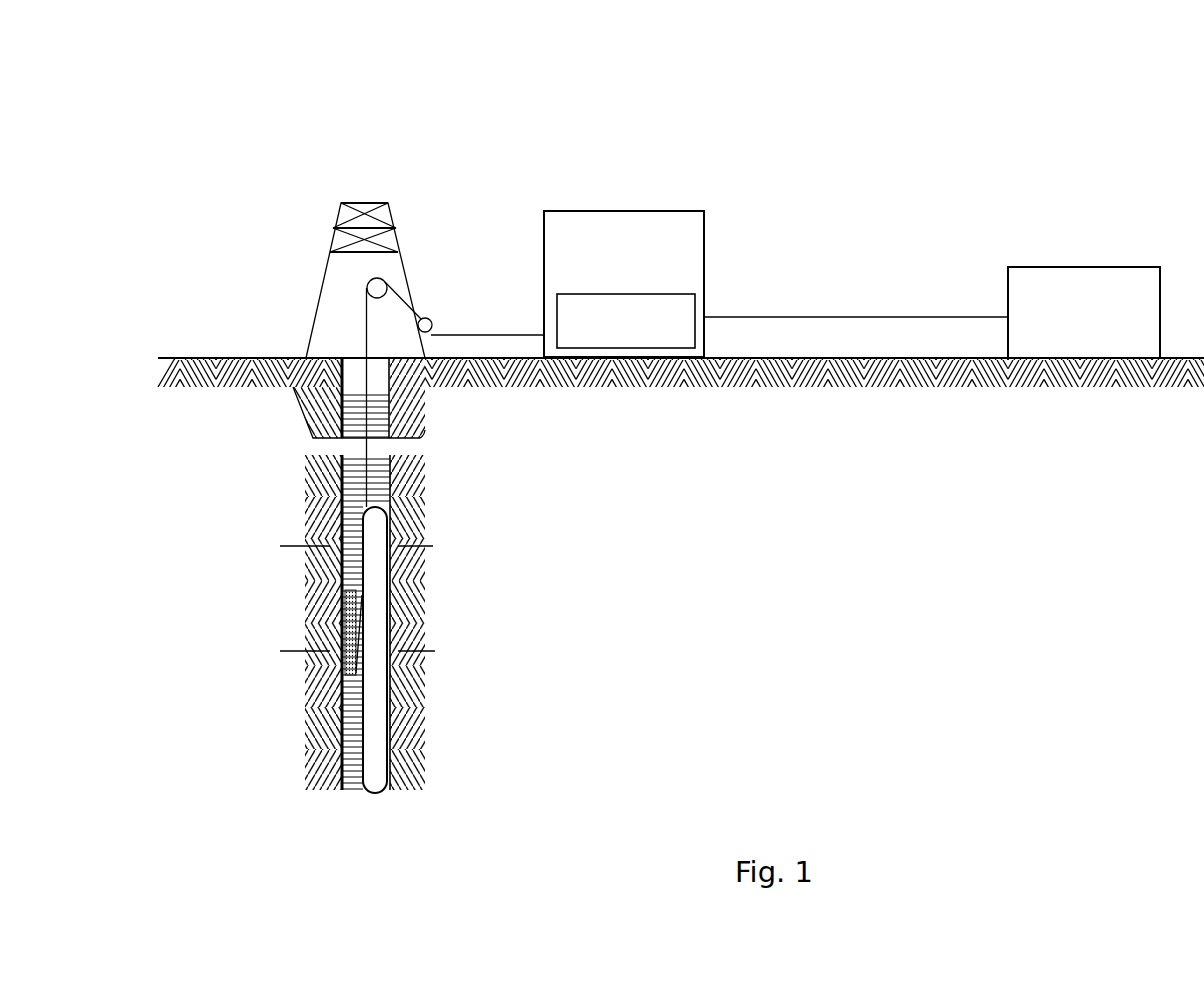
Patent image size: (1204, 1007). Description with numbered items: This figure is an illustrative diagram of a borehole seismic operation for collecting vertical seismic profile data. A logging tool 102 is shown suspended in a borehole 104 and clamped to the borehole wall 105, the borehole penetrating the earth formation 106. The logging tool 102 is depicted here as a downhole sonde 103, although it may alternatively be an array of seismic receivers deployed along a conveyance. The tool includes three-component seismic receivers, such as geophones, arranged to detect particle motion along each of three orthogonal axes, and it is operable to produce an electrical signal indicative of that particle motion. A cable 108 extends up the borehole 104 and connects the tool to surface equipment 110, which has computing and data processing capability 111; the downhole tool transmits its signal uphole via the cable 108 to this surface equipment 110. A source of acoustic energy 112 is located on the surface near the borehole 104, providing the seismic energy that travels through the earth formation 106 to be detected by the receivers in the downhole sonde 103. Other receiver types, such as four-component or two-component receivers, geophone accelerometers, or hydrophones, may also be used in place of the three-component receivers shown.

The logging tool 102 is at (462, 230).
The downhole sonde 103 is at (360, 527).
The borehole 104 is at (403, 462).
The borehole wall 105 is at (341, 632).
The earth formation 106 is at (433, 407).
The cable 108 is at (363, 346).
The surface equipment 110 is at (636, 211).
The computing and data processing capability 111 is at (686, 313).
The source of acoustic energy 112 is at (1062, 267).